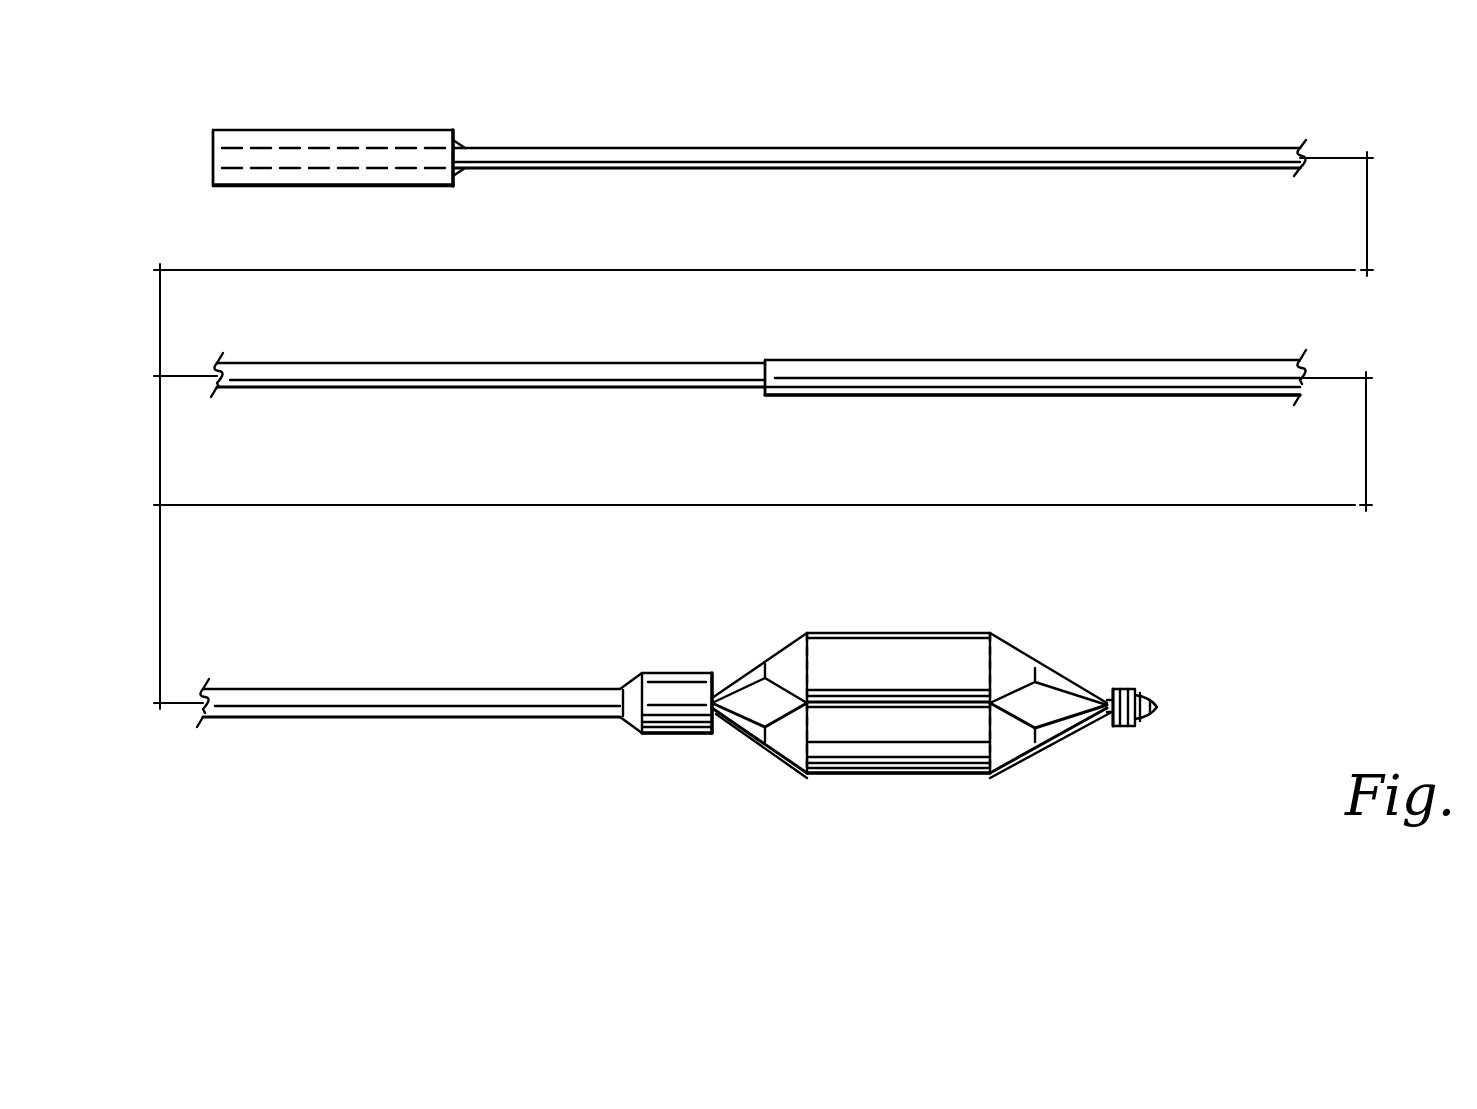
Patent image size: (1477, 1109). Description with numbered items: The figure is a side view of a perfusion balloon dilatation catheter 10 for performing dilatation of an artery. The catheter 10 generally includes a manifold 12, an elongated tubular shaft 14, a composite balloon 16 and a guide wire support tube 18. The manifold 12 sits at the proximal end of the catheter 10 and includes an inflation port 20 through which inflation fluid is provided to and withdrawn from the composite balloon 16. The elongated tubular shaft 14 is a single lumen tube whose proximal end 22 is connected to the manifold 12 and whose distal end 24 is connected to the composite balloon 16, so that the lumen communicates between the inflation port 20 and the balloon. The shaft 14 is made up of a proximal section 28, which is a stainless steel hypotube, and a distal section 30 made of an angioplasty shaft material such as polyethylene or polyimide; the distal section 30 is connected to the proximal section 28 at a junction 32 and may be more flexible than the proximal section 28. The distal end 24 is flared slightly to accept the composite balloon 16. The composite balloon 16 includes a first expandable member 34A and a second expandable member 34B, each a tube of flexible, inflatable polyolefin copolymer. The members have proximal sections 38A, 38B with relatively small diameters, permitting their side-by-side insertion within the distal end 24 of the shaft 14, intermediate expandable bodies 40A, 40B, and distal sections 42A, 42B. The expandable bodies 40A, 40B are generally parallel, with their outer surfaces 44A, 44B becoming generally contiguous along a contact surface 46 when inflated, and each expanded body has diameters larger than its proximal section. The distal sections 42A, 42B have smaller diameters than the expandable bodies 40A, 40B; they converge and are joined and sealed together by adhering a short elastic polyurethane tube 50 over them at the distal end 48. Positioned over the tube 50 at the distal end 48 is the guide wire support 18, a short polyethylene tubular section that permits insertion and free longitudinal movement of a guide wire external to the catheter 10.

The perfusion balloon dilatation catheter 10 is at (748, 812).
The manifold 12 is at (309, 130).
The elongated tubular shaft 14 is at (1084, 148).
The composite balloon 16 is at (888, 778).
The guide wire support tube 18 is at (1130, 688).
The inflation port 20 is at (213, 158).
The proximal end 22 is at (463, 140).
The distal end 24 is at (669, 673).
The proximal section 28 is at (724, 148).
The distal section 30 is at (1020, 369).
The junction 32 is at (767, 362).
The first expandable member 34A is at (956, 633).
The second expandable member 34B is at (948, 775).
The proximal section 38A is at (738, 668).
The proximal section 38B is at (754, 748).
The intermediate expandable body 40A is at (842, 633).
The intermediate expandable body 40B is at (828, 776).
The distal section 42A is at (1072, 675).
The distal section 42B is at (1056, 738).
The outer surface 44A is at (998, 636).
The outer surface 44B is at (983, 778).
The contact surface 46 is at (875, 700).
The distal end 48 is at (1160, 700).
The tube 50 is at (1142, 722).